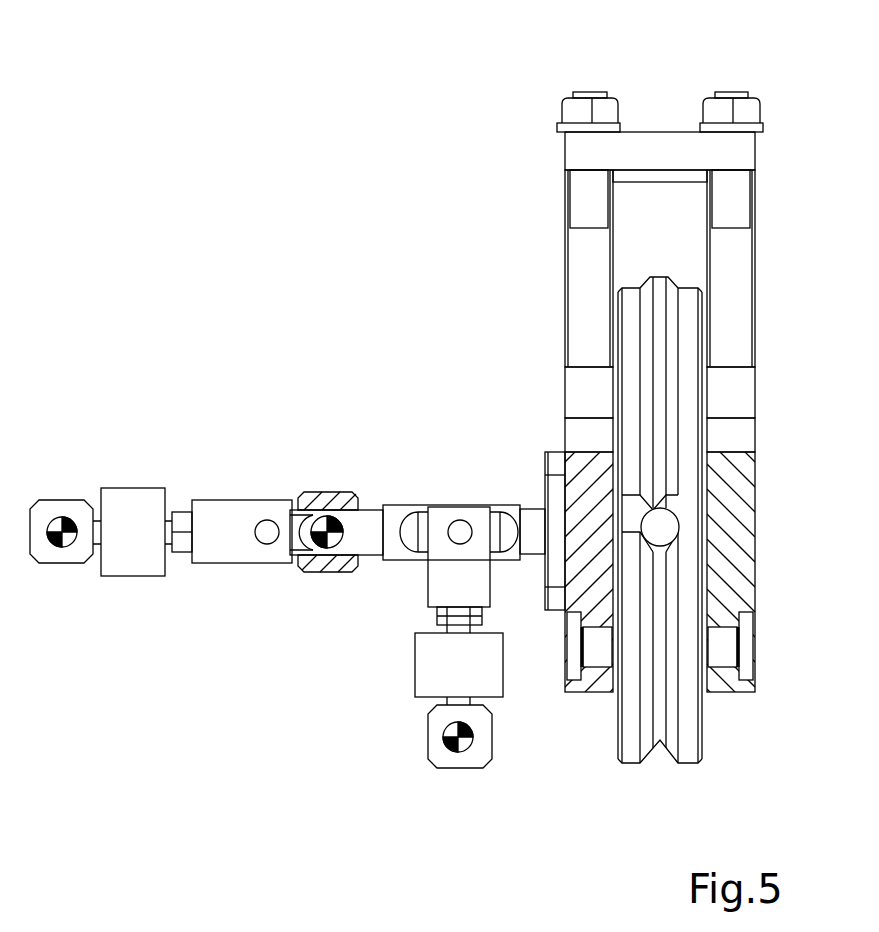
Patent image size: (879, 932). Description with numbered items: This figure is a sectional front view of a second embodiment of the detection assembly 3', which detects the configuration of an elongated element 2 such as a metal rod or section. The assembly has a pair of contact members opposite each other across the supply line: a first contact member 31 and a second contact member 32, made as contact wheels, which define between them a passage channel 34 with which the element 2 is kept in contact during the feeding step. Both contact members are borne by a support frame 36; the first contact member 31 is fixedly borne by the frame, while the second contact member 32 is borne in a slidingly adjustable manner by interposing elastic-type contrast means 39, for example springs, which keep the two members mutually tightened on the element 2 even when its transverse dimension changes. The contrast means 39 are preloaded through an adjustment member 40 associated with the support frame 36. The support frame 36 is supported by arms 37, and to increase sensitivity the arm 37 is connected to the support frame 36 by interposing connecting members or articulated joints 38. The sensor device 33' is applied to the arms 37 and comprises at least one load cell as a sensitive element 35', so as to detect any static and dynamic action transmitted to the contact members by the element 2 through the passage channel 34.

The detection assembly 3' is at (592, 390).
The adjustment member 40 is at (558, 125).
The support frame 36 is at (648, 158).
The second contact member 32 is at (672, 282).
The elastic-type contrast means 39 is at (582, 313).
The passage channel 34 is at (626, 512).
The element 2 is at (668, 527).
The first contact member 31 is at (700, 735).
The sensor device 33' is at (310, 620).
The arms 37 is at (45, 500).
The sensitive element 35' is at (346, 601).
The articulated joints 38 is at (333, 492).